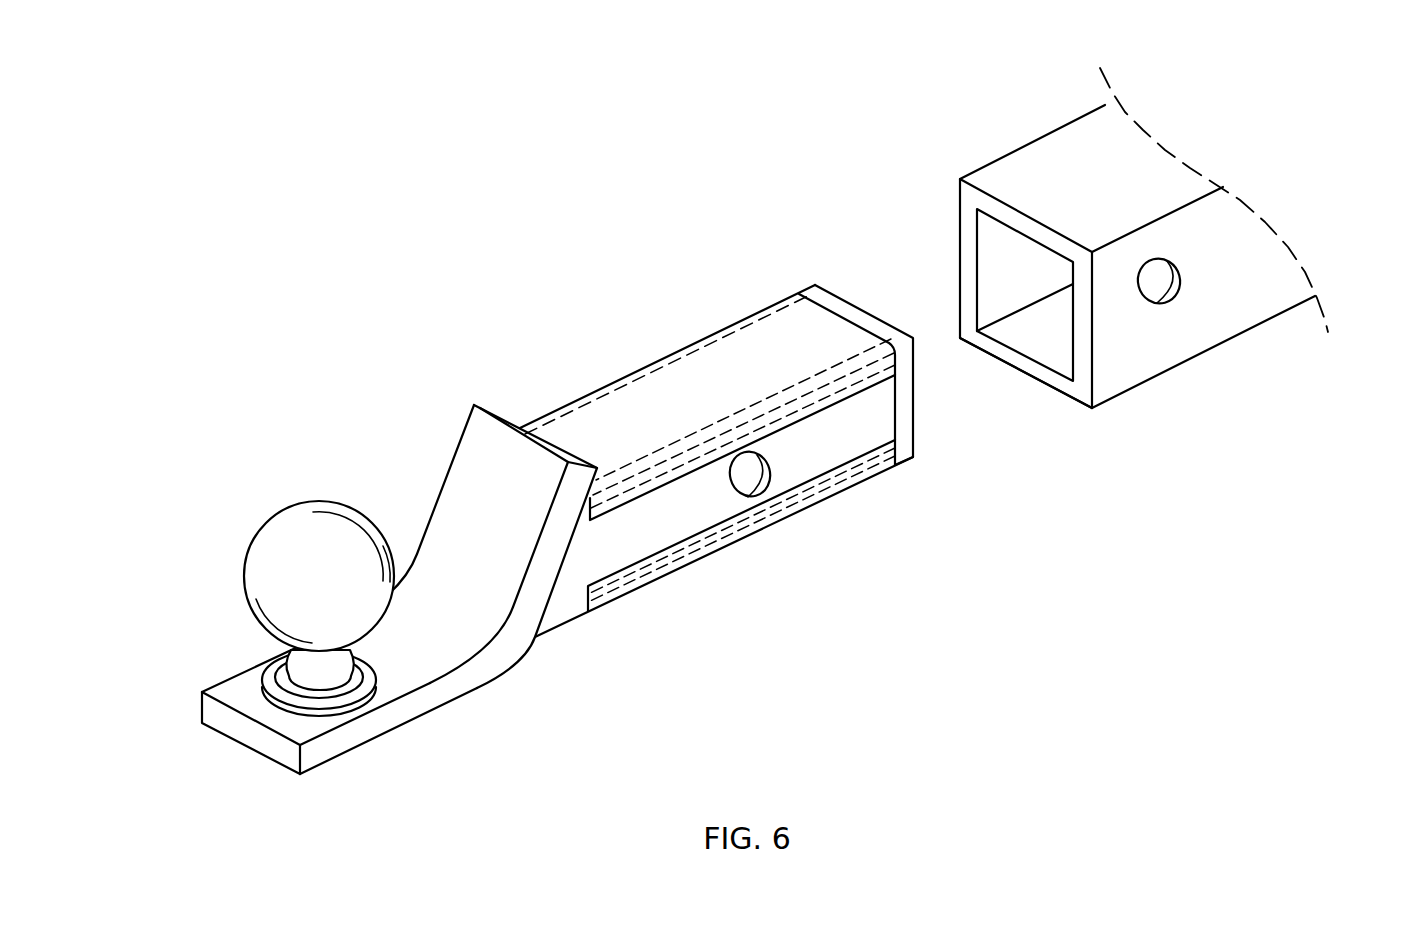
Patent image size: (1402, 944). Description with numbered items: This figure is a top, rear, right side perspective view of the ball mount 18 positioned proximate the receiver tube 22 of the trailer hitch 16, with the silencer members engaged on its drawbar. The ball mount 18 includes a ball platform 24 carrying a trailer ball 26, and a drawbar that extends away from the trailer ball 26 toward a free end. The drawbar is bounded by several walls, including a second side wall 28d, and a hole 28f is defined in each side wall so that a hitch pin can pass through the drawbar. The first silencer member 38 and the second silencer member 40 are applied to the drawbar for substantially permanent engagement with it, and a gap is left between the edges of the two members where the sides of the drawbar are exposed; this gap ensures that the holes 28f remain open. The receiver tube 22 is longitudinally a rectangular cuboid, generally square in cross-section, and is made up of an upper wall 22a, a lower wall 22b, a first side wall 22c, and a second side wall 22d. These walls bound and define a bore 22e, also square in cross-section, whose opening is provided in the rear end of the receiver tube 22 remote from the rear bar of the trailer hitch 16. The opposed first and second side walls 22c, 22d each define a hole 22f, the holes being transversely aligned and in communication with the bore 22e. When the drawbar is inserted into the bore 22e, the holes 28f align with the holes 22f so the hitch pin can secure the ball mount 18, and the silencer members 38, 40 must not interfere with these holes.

The trailer hitch 16 is at (1129, 284).
The ball mount 18 is at (216, 759).
The receiver tube 22 is at (1129, 284).
The upper wall 22a is at (1072, 198).
The lower wall 22b is at (1070, 396).
The first side wall 22c is at (960, 218).
The second side wall 22d is at (1278, 285).
The bore 22e is at (1056, 337).
The hole 22f is at (1157, 305).
The ball platform 24 is at (432, 738).
The trailer ball 26 is at (249, 494).
The second side wall 28d is at (601, 549).
The hole 28f is at (753, 500).
The first silencer member 38 is at (642, 385).
The second silencer member 40 is at (688, 599).